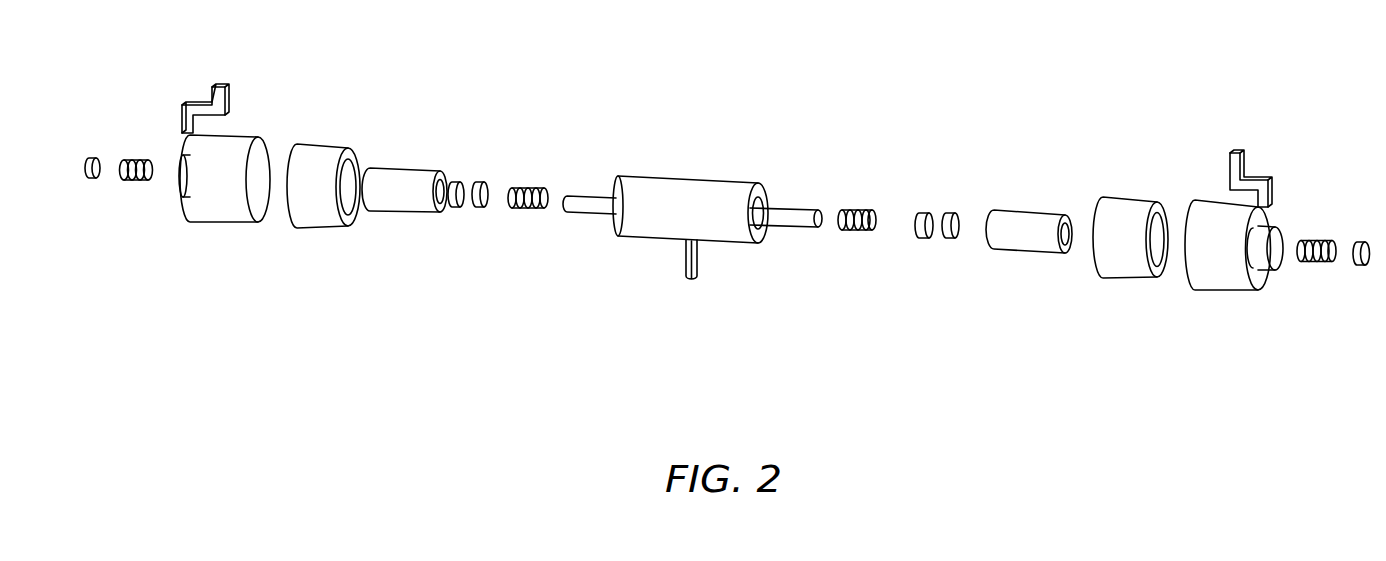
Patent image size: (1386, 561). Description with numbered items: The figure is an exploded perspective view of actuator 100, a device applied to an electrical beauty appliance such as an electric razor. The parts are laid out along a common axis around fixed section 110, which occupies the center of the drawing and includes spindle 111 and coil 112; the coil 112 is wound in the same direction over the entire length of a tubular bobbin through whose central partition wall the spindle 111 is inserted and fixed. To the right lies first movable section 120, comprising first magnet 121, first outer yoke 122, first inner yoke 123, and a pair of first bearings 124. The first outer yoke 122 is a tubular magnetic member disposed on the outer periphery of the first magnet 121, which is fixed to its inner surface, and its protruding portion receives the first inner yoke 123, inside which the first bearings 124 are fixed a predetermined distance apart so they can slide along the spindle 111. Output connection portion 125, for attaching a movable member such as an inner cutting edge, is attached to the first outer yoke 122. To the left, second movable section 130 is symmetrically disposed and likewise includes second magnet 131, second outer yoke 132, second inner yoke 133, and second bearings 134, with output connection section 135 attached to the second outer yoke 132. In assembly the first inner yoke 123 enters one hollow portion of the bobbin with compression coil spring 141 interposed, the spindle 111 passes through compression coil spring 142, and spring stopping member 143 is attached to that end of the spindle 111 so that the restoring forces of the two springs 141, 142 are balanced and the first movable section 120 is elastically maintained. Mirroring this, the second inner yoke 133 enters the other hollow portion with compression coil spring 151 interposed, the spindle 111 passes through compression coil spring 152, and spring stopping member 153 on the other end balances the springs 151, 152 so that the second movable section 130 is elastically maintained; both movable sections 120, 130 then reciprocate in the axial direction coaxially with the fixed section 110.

The actuator 100 is at (853, 104).
The fixed section 110 is at (812, 342).
The spindle 111 is at (787, 219).
The coil 112 is at (660, 215).
The first movable section 120 is at (1272, 342).
The first magnet 121 is at (1130, 270).
The first outer yoke 122 is at (1232, 272).
The first inner yoke 123 is at (1030, 250).
The first bearings 124 is at (950, 239).
The output connection portion 125 is at (1244, 170).
The second movable section 130 is at (505, 342).
The second magnet 131 is at (325, 214).
The second outer yoke 132 is at (213, 203).
The second inner yoke 133 is at (400, 206).
The second bearings 134 is at (480, 208).
The output connection section 135 is at (222, 97).
The compression coil spring 141 is at (867, 211).
The compression coil spring 142 is at (1311, 240).
The spring stopping member 143 is at (1358, 268).
The compression coil spring 151 is at (521, 189).
The compression coil spring 152 is at (131, 160).
The spring stopping member 153 is at (98, 157).